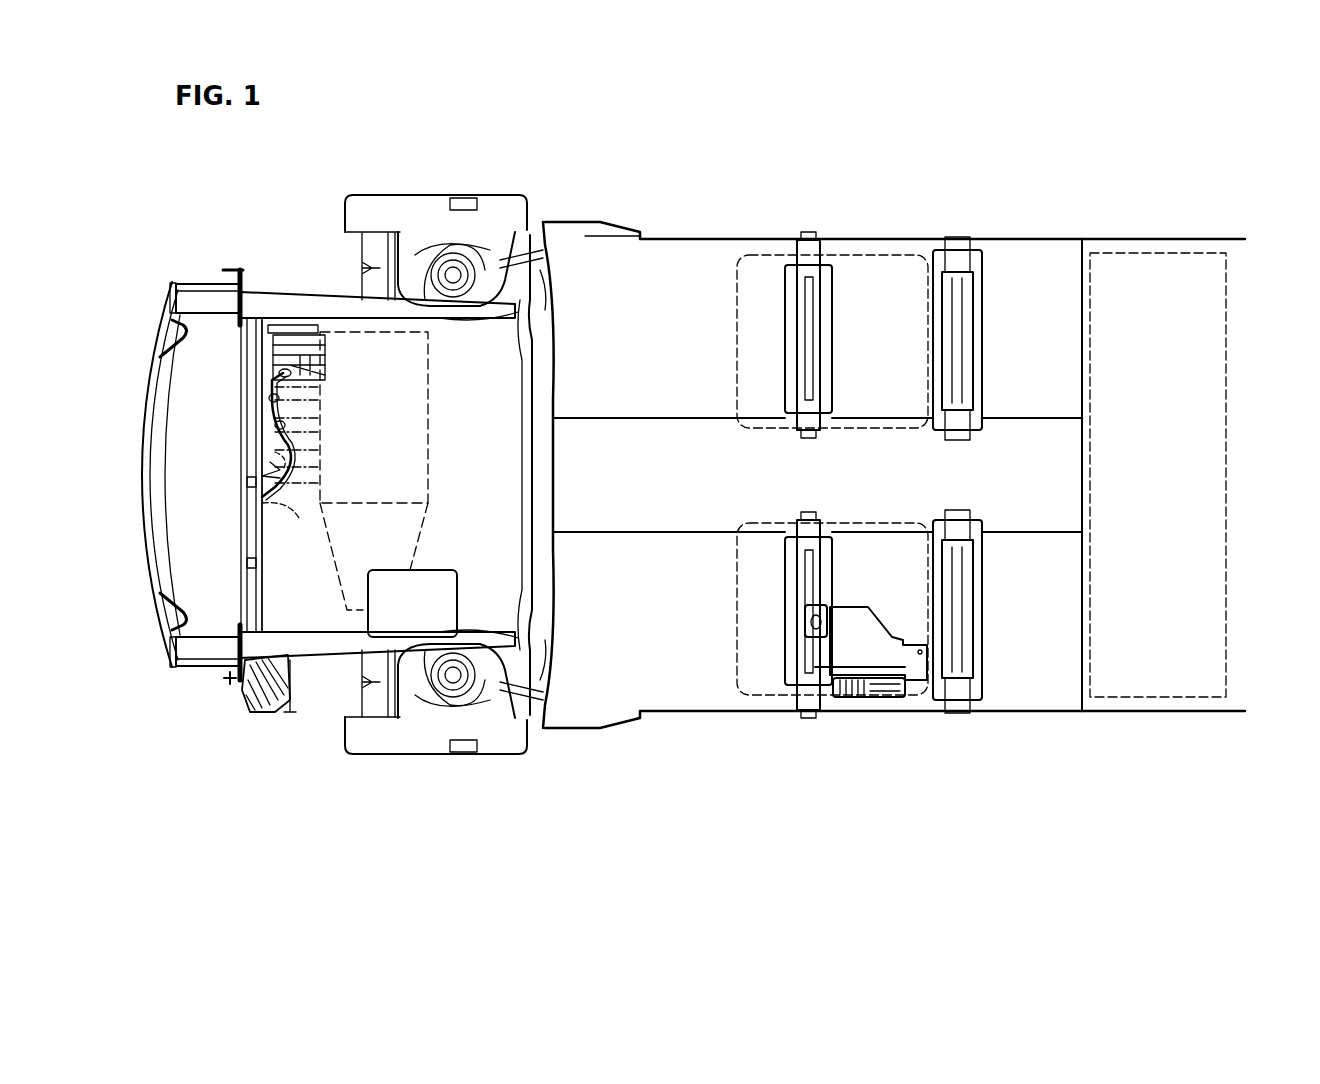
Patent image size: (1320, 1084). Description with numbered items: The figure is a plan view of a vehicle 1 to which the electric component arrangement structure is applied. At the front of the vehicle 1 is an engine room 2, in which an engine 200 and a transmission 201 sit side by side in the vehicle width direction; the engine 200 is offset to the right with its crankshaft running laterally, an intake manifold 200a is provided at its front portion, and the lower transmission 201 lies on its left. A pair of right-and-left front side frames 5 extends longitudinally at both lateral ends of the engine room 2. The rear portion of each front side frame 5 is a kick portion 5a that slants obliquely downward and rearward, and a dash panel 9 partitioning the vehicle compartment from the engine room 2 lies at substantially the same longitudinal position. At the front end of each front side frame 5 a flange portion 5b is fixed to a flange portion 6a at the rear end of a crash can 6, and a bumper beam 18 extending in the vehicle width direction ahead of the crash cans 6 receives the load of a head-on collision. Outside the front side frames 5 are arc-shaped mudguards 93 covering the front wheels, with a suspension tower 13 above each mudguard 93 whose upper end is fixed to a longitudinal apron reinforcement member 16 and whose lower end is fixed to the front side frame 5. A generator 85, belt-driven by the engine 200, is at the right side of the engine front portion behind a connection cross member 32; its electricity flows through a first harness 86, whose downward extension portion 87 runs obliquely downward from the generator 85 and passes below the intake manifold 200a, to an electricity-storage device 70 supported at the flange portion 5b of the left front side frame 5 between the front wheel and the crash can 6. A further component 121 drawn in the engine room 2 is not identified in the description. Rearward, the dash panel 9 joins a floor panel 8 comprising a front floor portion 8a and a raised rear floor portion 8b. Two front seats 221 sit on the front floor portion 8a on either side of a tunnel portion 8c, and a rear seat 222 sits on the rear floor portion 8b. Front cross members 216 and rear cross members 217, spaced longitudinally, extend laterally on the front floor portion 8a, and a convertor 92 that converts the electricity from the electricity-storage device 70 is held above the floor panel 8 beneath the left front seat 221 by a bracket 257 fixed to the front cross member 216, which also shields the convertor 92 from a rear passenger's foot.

The vehicle 1 is at (648, 165).
The engine room 2 is at (308, 557).
The front side frame 5 is at (332, 298).
The kick portion 5a is at (484, 319).
The flange portion 5b is at (250, 320).
The crash can 6 is at (205, 300).
The flange portion 6a is at (238, 325).
The floor panel 8 is at (895, 438).
The front floor portion 8a is at (690, 260).
The rear floor portion 8b is at (1120, 272).
The tunnel portion 8c is at (1030, 436).
The dash panel 9 is at (506, 384).
The suspension tower 13 is at (440, 270).
The apron reinforcement member 16 is at (402, 200).
The bumper beam 18 is at (150, 455).
The connection cross member 32 is at (275, 452).
The electricity-storage device 70 is at (250, 712).
The generator 85 is at (305, 328).
The first harness 86 is at (262, 476).
The downward extension portion 87 is at (282, 412).
The convertor 92 is at (890, 617).
The mudguard 93 is at (372, 243).
The junction box 121 is at (384, 580).
The engine 200 is at (426, 432).
The intake manifold 200a is at (262, 503).
The transmission 201 is at (428, 546).
The front cross member 216 is at (783, 320).
The rear cross member 217 is at (988, 316).
The front seat 221 is at (737, 330).
The rear seat 222 is at (1205, 252).
The bracket 257 is at (863, 646).